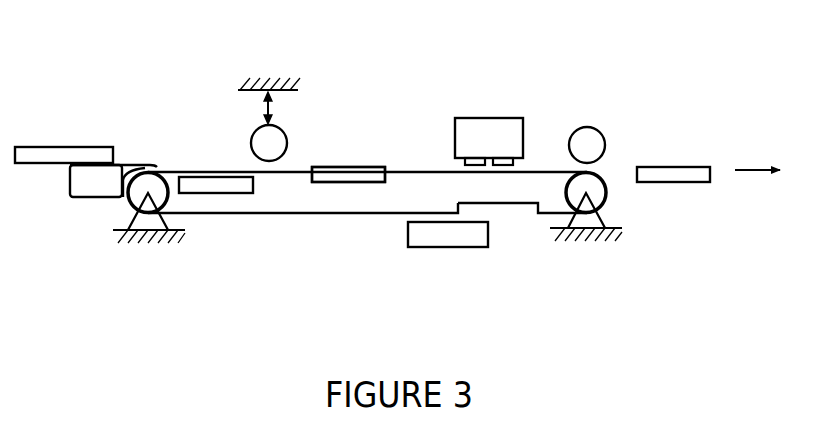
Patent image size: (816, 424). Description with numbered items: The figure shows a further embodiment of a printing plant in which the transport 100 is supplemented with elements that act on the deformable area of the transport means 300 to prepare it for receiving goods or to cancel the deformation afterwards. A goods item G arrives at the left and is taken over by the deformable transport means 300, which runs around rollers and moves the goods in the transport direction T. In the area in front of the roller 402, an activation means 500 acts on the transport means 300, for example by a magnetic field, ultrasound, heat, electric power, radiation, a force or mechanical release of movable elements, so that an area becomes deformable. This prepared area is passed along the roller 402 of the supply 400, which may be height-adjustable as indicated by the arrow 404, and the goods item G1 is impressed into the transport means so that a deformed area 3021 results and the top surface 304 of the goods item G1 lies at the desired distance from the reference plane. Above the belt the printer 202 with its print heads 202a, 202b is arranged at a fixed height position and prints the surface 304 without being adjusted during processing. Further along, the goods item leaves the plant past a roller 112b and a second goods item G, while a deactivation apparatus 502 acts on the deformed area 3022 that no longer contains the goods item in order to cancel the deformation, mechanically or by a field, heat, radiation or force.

The transport 100 is at (103, 223).
The transport means 300 is at (288, 205).
The deformed area 3021 is at (358, 182).
The deformed area 3022 is at (523, 203).
The top surface 304 is at (372, 167).
The goods item G1 is at (352, 167).
The supply 400 is at (277, 73).
The roller 402 is at (252, 142).
The arrow 404 is at (272, 108).
The activation means 500 is at (218, 193).
The deactivation apparatus 502 is at (447, 247).
The printer 202 is at (490, 118).
The print head 202a is at (480, 158).
The print head 202b is at (502, 158).
The guide roller 112b is at (583, 128).
The goods item G is at (60, 147).
The transport direction T is at (318, 315).